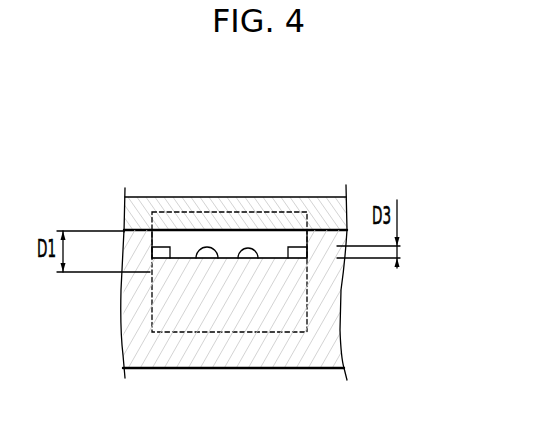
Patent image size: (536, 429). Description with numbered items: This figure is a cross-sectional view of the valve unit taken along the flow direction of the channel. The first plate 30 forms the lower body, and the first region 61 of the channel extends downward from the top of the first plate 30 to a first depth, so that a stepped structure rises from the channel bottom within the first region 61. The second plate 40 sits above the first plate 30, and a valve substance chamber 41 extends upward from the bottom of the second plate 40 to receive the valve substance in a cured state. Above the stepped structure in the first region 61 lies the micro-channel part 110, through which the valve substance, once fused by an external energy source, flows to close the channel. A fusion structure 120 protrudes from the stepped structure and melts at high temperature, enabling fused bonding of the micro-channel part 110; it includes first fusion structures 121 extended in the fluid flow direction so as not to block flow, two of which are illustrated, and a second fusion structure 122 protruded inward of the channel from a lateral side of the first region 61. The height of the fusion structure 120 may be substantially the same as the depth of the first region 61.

The first plate 30 is at (124, 354).
The second plate 40 is at (325, 202).
The valve substance chamber 41 is at (273, 213).
The first region 61 is at (210, 290).
The micro-channel part 110 is at (229, 240).
The fusion structure 120 is at (307, 292).
The first fusion structure 121 is at (256, 253).
The second fusion structure 122 is at (293, 250).